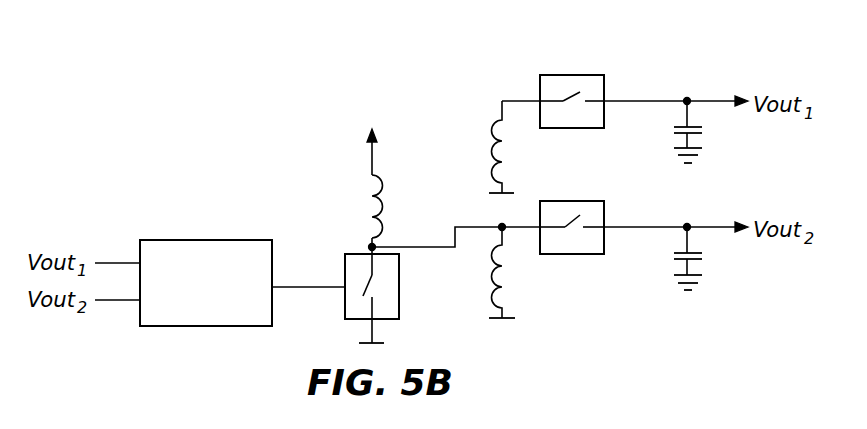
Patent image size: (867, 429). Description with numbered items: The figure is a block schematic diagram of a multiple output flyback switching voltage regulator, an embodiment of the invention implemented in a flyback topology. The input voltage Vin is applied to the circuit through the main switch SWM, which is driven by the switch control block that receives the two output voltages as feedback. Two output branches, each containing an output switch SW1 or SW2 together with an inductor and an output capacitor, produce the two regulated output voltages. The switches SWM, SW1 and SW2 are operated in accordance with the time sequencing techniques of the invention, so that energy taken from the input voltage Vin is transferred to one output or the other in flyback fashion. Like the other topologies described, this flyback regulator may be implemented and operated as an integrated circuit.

The main switch SWM is at (401, 295).
The first output switch SW1 is at (572, 84).
The second output switch SW2 is at (572, 208).
The input voltage Vin is at (377, 172).